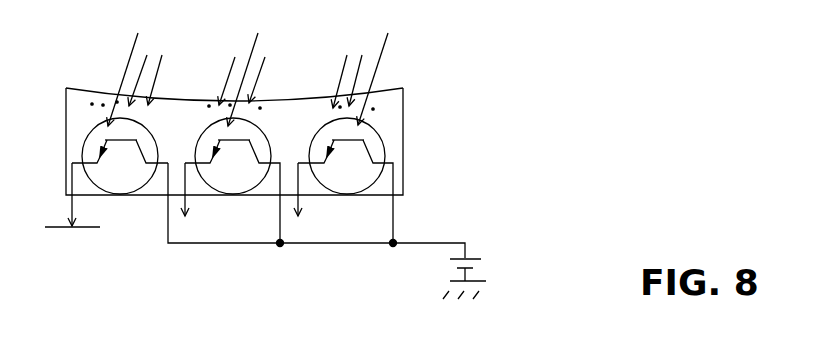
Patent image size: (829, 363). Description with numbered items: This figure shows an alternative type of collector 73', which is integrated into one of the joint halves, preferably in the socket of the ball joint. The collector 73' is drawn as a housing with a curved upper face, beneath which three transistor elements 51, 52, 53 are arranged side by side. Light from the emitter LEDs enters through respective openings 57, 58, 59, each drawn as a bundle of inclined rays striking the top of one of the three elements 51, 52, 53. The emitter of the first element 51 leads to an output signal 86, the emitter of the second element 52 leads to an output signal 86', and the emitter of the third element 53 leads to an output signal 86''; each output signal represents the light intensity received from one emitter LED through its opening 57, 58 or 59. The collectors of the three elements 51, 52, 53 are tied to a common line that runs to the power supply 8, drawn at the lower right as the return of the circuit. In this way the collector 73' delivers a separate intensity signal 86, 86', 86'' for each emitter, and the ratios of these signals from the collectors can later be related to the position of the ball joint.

The power supply 8 is at (467, 254).
The phototransistor 51 is at (113, 178).
The phototransistor 52 is at (233, 170).
The phototransistor 53 is at (345, 170).
The opening 57 is at (95, 108).
The opening 58 is at (213, 108).
The opening 59 is at (327, 105).
The collector 73' is at (291, 141).
The output signal 86 is at (61, 210).
The output signal 86' is at (199, 230).
The output signal 86'' is at (320, 230).